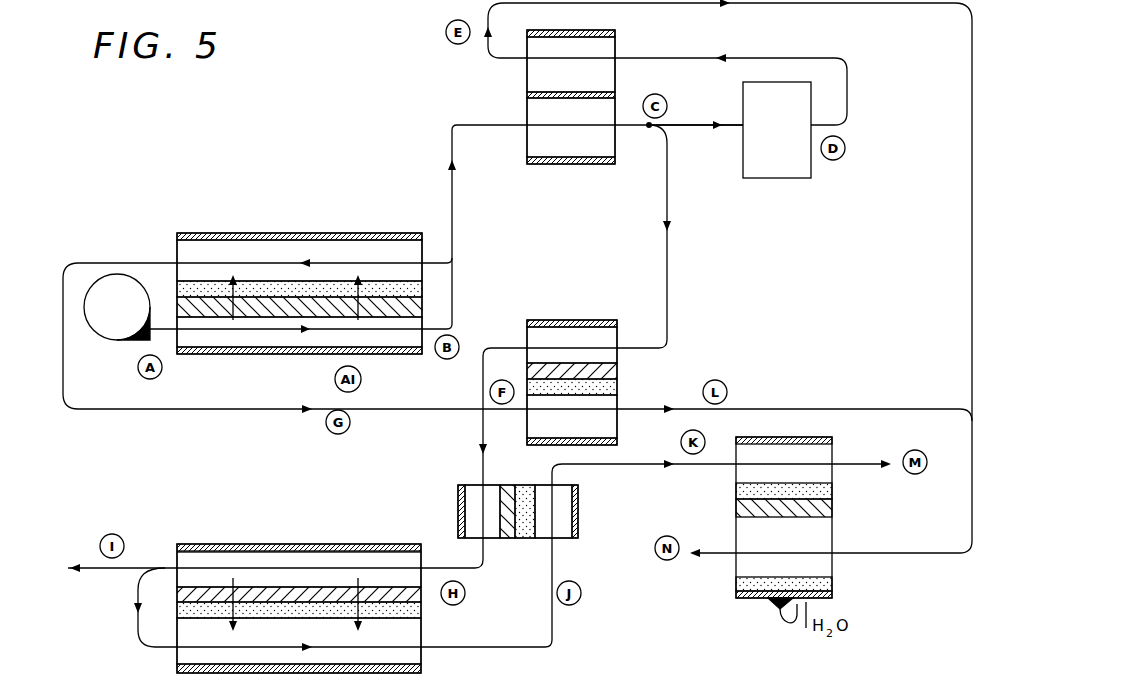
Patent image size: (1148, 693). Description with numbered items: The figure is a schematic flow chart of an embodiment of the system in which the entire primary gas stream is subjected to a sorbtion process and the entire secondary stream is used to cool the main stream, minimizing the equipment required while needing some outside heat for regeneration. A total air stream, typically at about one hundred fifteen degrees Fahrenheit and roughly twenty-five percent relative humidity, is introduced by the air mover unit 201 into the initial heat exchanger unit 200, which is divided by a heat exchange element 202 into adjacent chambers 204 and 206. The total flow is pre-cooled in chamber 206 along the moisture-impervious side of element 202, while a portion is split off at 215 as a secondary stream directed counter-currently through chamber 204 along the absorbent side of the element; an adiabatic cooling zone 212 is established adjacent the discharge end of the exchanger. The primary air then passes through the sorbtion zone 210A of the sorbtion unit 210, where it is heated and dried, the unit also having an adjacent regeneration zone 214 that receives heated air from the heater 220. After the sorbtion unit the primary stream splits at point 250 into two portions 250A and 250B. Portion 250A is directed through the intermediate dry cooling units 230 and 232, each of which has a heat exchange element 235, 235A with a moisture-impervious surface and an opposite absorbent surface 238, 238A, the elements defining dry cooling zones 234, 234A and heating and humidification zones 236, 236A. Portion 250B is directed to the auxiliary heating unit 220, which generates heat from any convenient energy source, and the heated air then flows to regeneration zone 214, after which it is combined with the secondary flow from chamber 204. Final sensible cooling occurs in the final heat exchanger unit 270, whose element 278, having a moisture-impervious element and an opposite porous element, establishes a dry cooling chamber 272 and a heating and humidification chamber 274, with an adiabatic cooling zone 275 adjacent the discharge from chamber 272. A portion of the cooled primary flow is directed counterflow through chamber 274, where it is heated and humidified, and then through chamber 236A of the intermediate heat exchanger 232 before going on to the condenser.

The initial heat exchanger unit 200 is at (339, 274).
The air mover unit 201 is at (102, 342).
The heat exchange element 202 is at (371, 373).
The chamber 204 is at (265, 251).
The chamber 206 is at (278, 338).
The sorbtion unit 210 is at (580, 96).
The sorbtion zone 210A is at (540, 143).
The adiabatic cooling zone 212 is at (402, 312).
The regeneration zone 214 is at (542, 76).
The split point 215 is at (455, 270).
The auxiliary heating unit 220 is at (800, 160).
The intermediate dry cooling unit 230 is at (606, 352).
The intermediate dry cooling unit 232 is at (518, 524).
The dry cooling zone 234 is at (556, 333).
The dry cooling zone 234A is at (462, 500).
The heat exchange element 235 is at (617, 383).
The heat exchange element 235A is at (514, 526).
The heating and humidification zone 236 is at (620, 364).
The heating and humidification zone 236A is at (505, 486).
The absorbent surface 238 is at (617, 396).
The absorbent surface 238A is at (527, 540).
The split point 250 is at (650, 128).
The primary air stream portion 250A is at (668, 213).
The primary air stream portion 250B is at (698, 127).
The final heat exchanger unit 270 is at (310, 563).
The dry cooling chamber 272 is at (330, 568).
The heating and humidification chamber 274 is at (289, 641).
The adiabatic cooling zone 275 is at (207, 597).
The heat exchange element 278 is at (418, 604).